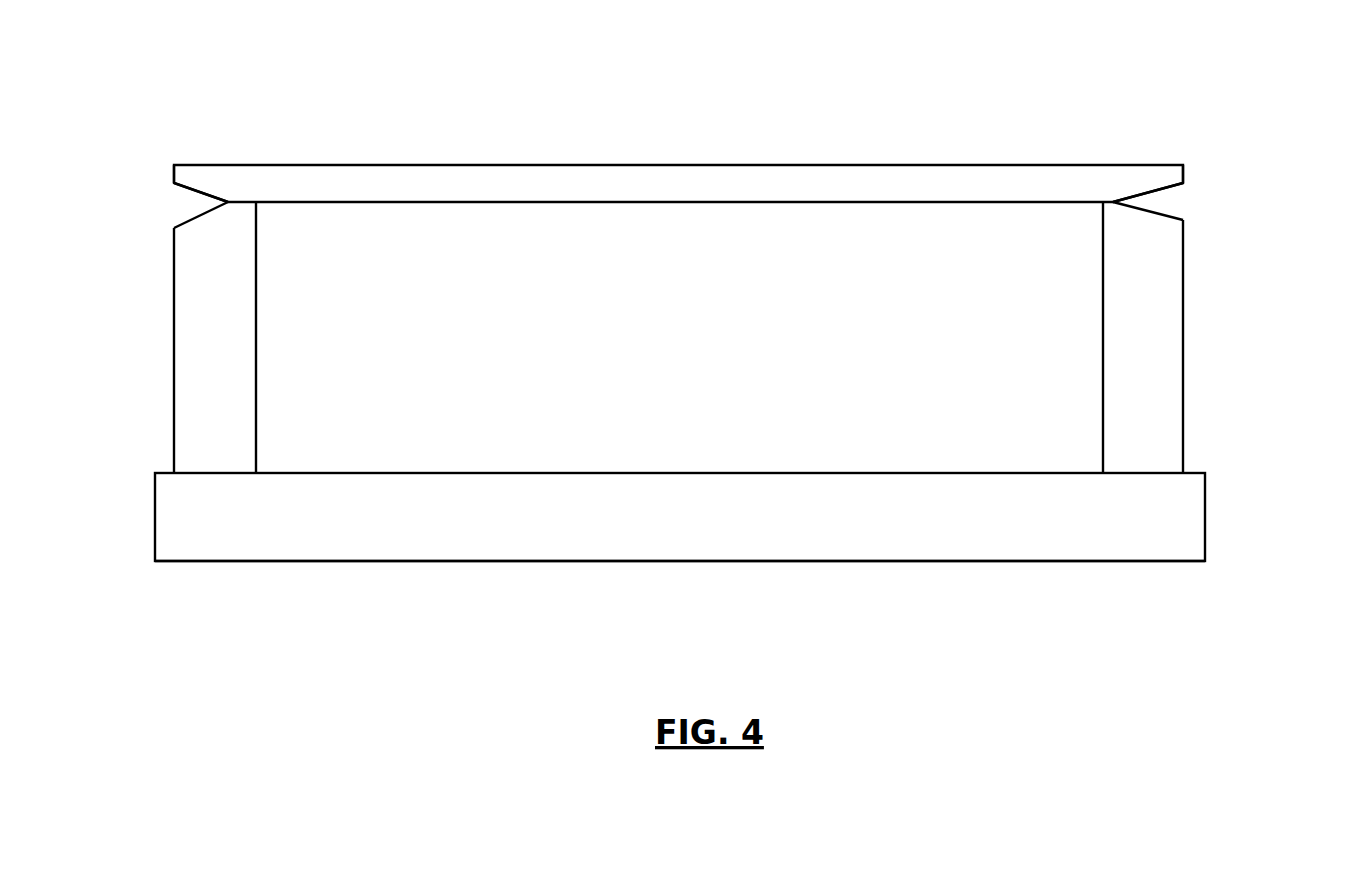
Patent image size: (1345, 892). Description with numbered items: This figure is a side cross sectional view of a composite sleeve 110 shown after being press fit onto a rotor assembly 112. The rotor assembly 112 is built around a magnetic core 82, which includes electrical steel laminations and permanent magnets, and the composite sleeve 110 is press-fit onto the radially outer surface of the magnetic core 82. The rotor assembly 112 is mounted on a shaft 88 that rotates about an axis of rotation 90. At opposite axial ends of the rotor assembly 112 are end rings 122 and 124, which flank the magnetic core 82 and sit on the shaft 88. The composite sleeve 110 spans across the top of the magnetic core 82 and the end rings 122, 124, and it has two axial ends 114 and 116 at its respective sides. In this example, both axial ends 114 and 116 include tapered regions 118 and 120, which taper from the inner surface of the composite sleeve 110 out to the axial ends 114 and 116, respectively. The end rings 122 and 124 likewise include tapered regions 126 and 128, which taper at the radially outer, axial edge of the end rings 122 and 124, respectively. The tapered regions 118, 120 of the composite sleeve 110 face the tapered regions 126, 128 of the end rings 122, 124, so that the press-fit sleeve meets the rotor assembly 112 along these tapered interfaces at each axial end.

The magnetic core 82 is at (679, 337).
The shaft 88 is at (680, 517).
The axis of rotation 90 is at (663, 561).
The composite sleeve 110 is at (750, 164).
The rotor assembly 112 is at (1246, 313).
The axial end 114 is at (1184, 172).
The axial end 116 is at (172, 170).
The tapered region 118 is at (1165, 188).
The tapered region 120 is at (203, 190).
The end ring 122 is at (1183, 255).
The end ring 124 is at (174, 325).
The tapered region 126 is at (1163, 215).
The tapered region 128 is at (188, 218).